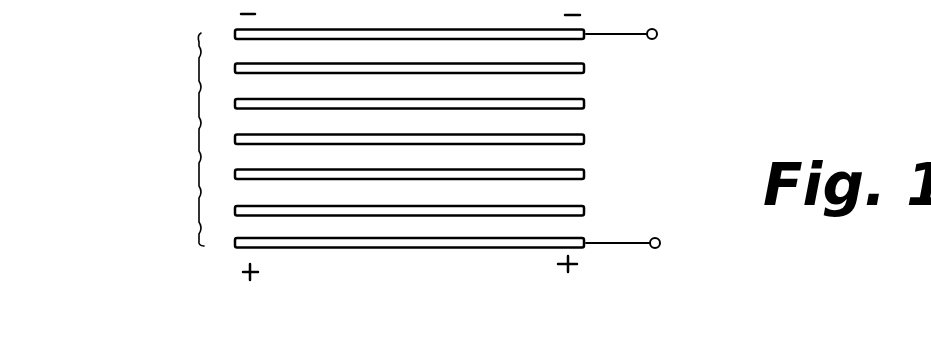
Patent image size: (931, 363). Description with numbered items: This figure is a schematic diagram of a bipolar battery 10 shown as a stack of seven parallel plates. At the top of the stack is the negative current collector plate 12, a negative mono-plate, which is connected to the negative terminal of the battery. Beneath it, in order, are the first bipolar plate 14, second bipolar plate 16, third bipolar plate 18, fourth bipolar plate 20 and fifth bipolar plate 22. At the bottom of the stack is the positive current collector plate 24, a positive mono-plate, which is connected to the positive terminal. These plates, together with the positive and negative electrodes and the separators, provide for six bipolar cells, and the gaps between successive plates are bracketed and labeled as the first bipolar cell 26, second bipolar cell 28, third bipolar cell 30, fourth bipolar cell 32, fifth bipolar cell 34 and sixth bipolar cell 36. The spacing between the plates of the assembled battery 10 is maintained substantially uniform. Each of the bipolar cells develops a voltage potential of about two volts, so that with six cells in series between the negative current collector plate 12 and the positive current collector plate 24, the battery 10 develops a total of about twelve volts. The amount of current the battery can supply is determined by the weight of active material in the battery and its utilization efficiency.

The bipolar battery 10 is at (122, 130).
The negative current collector plate 12 is at (586, 38).
The first bipolar plate 14 is at (586, 68).
The second bipolar plate 16 is at (586, 104).
The third bipolar plate 18 is at (586, 138).
The fourth bipolar plate 20 is at (586, 173).
The fifth bipolar plate 22 is at (586, 208).
The positive current collector plate 24 is at (547, 248).
The first bipolar cell 26 is at (197, 52).
The second bipolar cell 28 is at (197, 87).
The third bipolar cell 30 is at (197, 123).
The fourth bipolar cell 32 is at (197, 157).
The fifth bipolar cell 34 is at (197, 192).
The sixth bipolar cell 36 is at (197, 228).